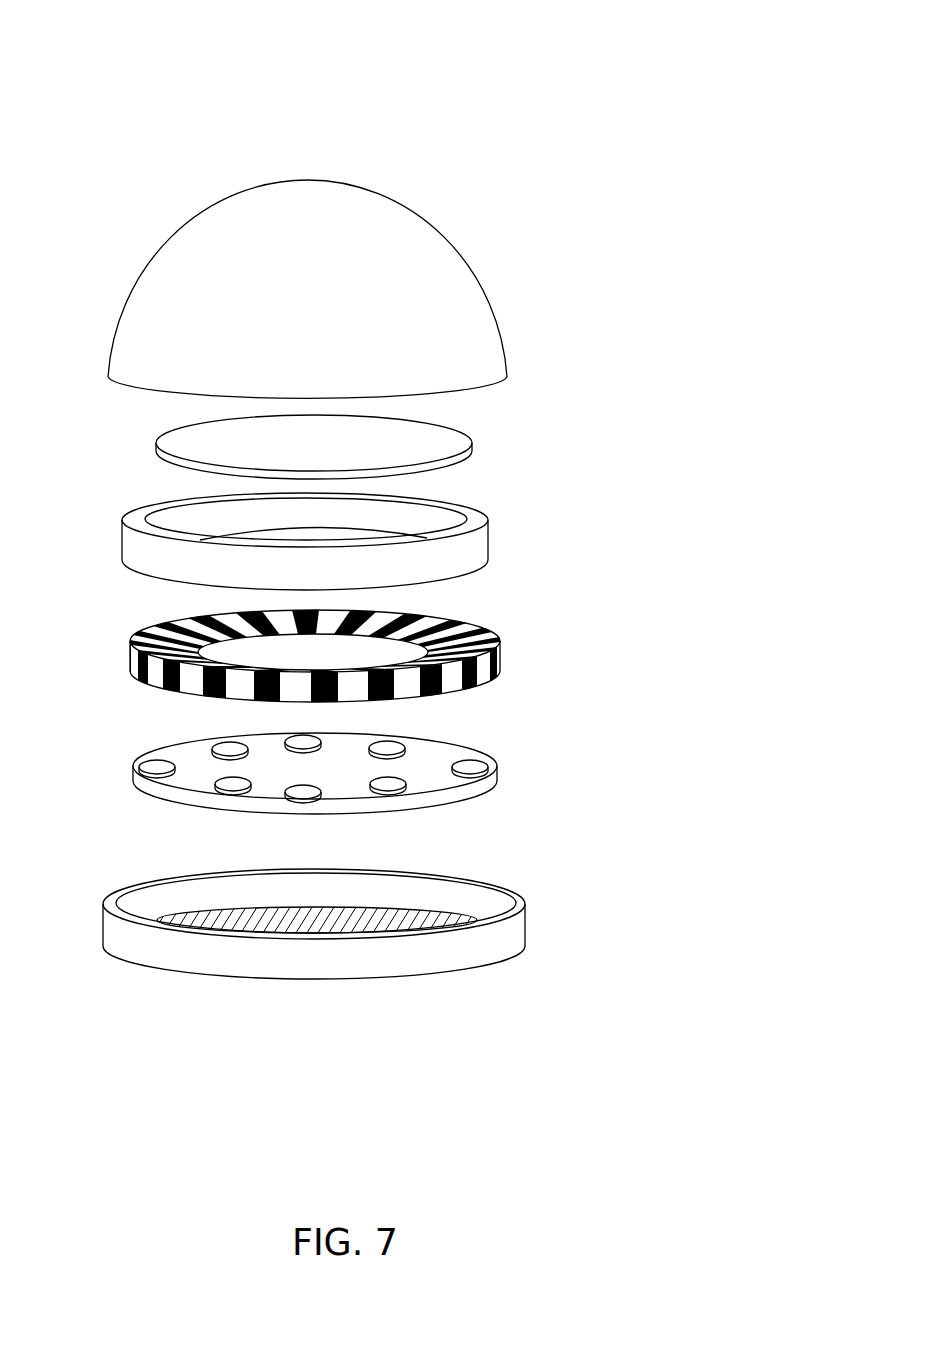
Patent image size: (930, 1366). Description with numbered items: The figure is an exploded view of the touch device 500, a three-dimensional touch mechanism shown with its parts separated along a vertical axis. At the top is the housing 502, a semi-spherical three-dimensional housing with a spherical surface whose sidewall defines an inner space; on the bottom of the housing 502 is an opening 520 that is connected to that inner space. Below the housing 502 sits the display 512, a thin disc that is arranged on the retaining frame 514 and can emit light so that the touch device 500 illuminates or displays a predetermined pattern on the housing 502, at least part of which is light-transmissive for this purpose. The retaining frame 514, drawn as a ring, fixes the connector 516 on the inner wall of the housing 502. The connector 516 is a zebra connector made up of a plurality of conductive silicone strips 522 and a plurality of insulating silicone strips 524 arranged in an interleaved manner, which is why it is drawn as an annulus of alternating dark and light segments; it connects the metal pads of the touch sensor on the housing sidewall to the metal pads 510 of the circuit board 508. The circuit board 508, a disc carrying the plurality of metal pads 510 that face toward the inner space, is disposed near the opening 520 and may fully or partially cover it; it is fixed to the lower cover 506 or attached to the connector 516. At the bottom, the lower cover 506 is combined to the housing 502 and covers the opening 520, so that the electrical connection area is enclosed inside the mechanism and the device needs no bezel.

The touch device 500 is at (612, 127).
The housing 502 is at (301, 333).
The lower cover 506 is at (522, 937).
The circuit board 508 is at (378, 784).
The metal pads 510 is at (473, 767).
The display 512 is at (455, 445).
The retaining frame 514 is at (483, 540).
The connector 516 is at (333, 666).
The opening 520 is at (143, 397).
The conductive silicone strips 522 is at (149, 691).
The insulating silicone strips 524 is at (493, 672).